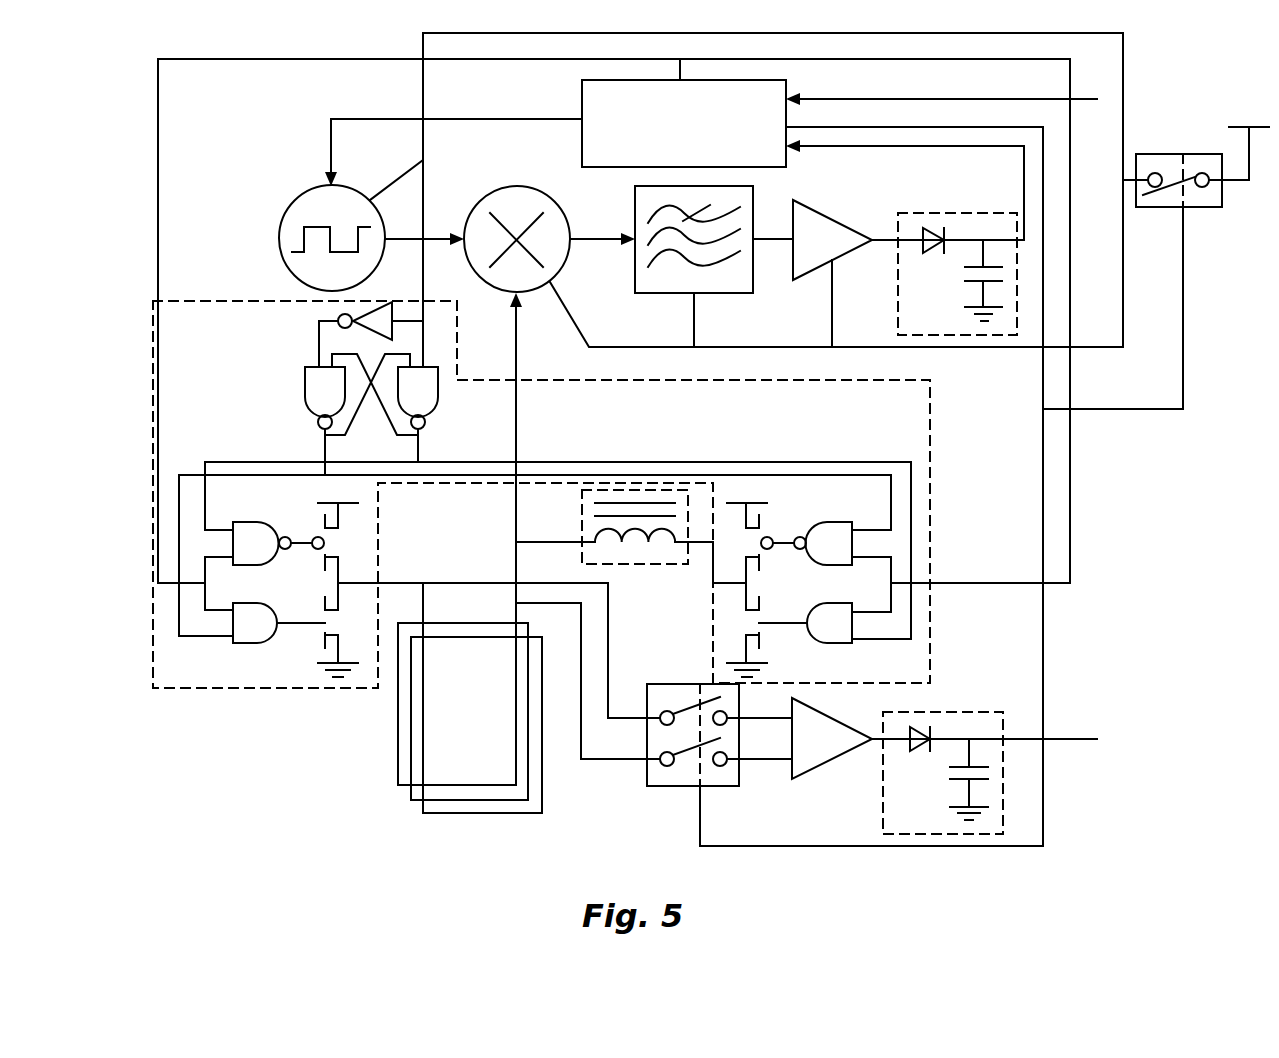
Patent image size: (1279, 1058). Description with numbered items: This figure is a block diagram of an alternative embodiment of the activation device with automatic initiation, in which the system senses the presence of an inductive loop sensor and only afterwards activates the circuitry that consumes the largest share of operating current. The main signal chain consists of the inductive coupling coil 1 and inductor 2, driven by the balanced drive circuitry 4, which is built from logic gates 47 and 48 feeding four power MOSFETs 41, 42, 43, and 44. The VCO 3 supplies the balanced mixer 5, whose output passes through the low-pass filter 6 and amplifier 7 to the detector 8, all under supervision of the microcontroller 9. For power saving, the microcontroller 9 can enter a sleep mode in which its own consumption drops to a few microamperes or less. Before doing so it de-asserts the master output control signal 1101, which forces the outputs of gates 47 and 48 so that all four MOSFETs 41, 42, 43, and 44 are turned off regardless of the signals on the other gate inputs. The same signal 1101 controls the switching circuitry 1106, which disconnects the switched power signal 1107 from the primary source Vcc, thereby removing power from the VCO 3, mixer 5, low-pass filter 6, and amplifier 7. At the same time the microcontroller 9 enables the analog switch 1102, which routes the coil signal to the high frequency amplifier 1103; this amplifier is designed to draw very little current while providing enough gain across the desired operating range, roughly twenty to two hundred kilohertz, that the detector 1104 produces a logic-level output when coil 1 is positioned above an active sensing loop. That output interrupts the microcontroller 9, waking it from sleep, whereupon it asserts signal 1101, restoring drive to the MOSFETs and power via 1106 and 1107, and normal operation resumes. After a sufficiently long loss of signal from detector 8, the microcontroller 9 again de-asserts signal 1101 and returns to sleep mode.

The inductive coupling coil 1 is at (451, 698).
The inductor 2 is at (635, 548).
The VCO 3 is at (317, 238).
The balanced drive circuitry 4 is at (352, 388).
The balanced mixer 5 is at (512, 233).
The low-pass filter 6 is at (675, 238).
The amplifier 7 is at (832, 230).
The detector 8 is at (948, 274).
The microcontroller 9 is at (667, 123).
The power MOSFET 41 is at (346, 533).
The power MOSFET 42 is at (349, 630).
The power MOSFET 43 is at (745, 533).
The power MOSFET 44 is at (742, 630).
The logic gate 47 is at (252, 552).
The logic gate 48 is at (835, 553).
The master output control signal 1101 is at (614, 321).
The analog switch 1102 is at (719, 721).
The high frequency amplifier 1103 is at (944, 738).
The detector 1104 is at (943, 773).
The switching circuitry 1106 is at (1196, 157).
The switched power signal 1107 is at (778, 190).